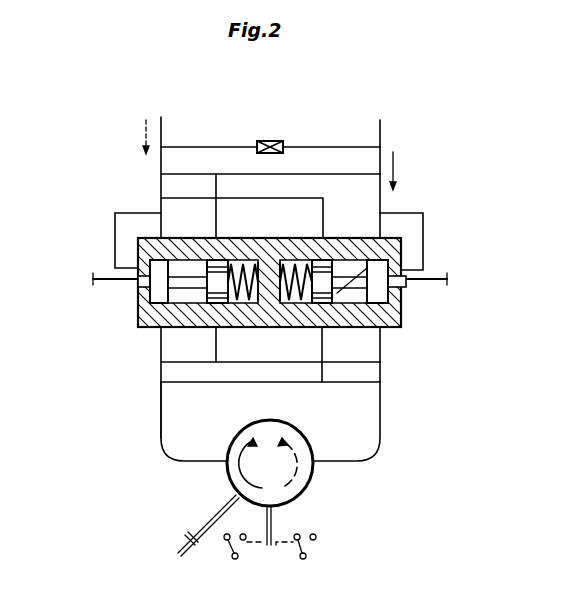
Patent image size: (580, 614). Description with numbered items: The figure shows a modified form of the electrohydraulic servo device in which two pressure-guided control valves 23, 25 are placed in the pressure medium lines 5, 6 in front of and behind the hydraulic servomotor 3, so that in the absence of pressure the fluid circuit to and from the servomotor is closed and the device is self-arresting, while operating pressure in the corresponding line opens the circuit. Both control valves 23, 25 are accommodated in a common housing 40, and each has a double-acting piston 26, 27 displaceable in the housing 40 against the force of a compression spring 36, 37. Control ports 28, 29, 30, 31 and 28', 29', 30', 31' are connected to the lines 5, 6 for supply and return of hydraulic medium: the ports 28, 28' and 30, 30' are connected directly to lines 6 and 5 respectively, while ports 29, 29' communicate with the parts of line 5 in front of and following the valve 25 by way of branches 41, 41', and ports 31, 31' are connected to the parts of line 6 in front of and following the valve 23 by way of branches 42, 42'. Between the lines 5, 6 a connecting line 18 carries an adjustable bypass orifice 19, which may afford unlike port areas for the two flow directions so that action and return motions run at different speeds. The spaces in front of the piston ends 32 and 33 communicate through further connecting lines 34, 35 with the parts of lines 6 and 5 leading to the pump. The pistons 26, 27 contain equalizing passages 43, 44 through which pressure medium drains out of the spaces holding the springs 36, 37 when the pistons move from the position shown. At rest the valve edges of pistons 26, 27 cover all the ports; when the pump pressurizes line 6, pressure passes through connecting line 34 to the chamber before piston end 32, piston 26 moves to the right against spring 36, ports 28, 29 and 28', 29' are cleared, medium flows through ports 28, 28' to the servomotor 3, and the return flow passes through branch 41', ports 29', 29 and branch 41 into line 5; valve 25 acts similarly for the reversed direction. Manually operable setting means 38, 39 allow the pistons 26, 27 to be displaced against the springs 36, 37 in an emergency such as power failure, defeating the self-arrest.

The hydraulic servomotor 3 is at (305, 493).
The pressure medium line 5 is at (380, 127).
The pressure medium line 6 is at (161, 124).
The connecting line 18 is at (217, 146).
The adjustable bypass orifice 19 is at (279, 141).
The pressure-guided control valve 23 is at (185, 330).
The pressure-guided control valve 25 is at (370, 330).
The double-acting piston 26 is at (147, 330).
The double-acting piston 27 is at (350, 330).
The control port 28 is at (109, 220).
The control port 28' is at (132, 366).
The control port 29 is at (207, 205).
The control port 29' is at (241, 354).
The control port 30 is at (426, 221).
The control port 30' is at (423, 363).
The control port 31 is at (387, 205).
The control port 31' is at (379, 398).
The piston end 32 is at (190, 282).
The piston end 33 is at (401, 310).
The connecting line 34 is at (115, 246).
The connecting line 35 is at (423, 246).
The compression spring 36 is at (242, 260).
The compression spring 37 is at (305, 260).
The manually operable setting means 38 is at (93, 281).
The manually operable setting means 39 is at (447, 283).
The common housing 40 is at (266, 330).
The branch 41 is at (331, 184).
The branch 41' is at (298, 374).
The branch 42 is at (162, 181).
The branch 42' is at (171, 404).
The equalizing passage 43 is at (150, 286).
The equalizing passage 44 is at (403, 328).